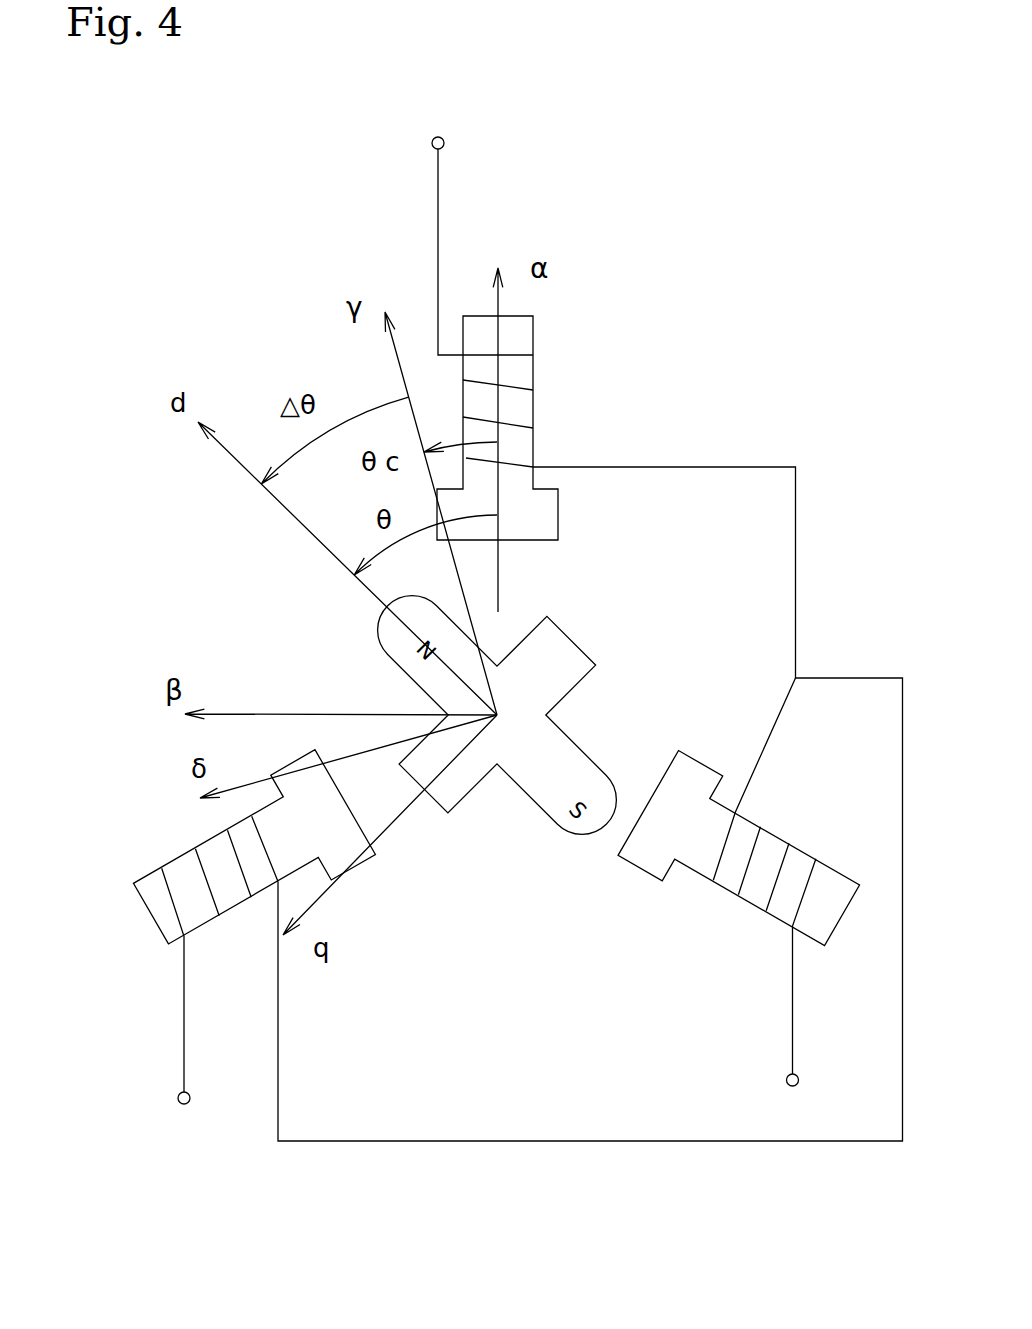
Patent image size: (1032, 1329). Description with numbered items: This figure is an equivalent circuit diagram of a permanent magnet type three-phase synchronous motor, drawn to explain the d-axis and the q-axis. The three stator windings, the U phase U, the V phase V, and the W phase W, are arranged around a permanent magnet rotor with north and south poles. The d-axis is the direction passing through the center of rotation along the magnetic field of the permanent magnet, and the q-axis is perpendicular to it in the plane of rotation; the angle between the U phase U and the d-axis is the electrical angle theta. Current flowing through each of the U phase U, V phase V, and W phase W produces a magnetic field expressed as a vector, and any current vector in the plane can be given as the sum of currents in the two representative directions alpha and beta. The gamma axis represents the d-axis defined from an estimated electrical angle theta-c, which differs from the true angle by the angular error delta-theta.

The U phase U is at (590, 634).
The V phase V is at (745, 896).
The W phase W is at (248, 937).